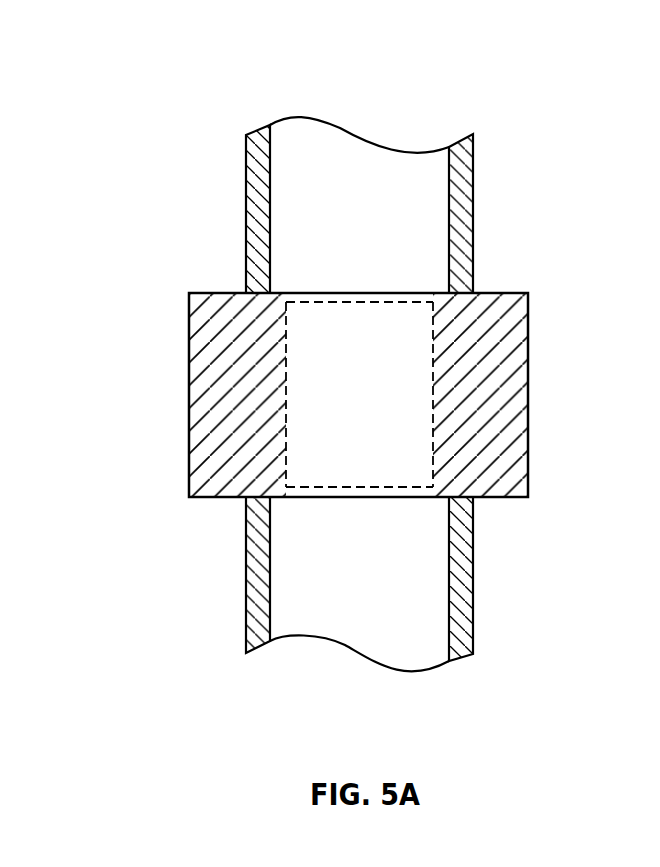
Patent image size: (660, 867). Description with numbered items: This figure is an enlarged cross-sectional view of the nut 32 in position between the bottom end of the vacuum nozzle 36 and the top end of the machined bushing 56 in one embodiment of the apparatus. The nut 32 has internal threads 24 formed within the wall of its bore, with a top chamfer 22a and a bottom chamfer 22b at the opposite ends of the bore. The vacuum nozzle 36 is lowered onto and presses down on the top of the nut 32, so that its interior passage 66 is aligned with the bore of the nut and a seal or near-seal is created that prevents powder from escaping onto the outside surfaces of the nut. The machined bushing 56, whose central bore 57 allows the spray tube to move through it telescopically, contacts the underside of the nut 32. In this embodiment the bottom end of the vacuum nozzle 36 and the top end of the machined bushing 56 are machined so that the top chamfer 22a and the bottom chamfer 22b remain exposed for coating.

The top chamfer 22a is at (277, 299).
The bottom chamfer 22b is at (274, 490).
The internal threads 24 is at (436, 352).
The nut 32 is at (531, 454).
The vacuum nozzle 36 is at (246, 188).
The machined bushing 56 is at (318, 609).
The central bore 57 is at (348, 632).
The interior passage 66 is at (318, 181).